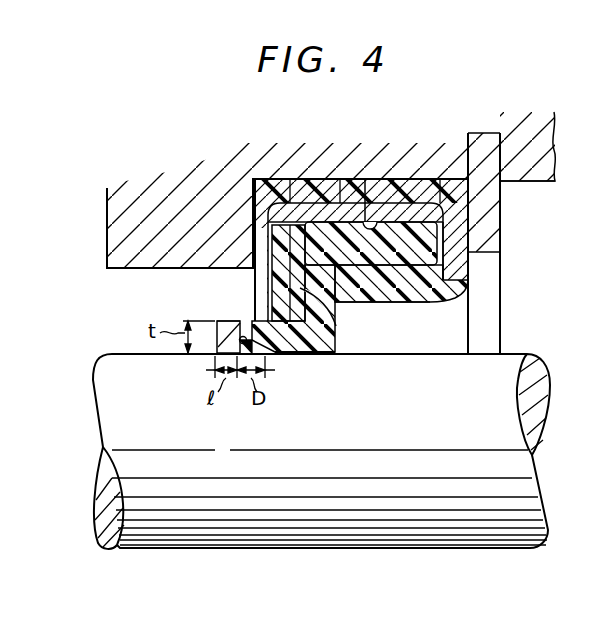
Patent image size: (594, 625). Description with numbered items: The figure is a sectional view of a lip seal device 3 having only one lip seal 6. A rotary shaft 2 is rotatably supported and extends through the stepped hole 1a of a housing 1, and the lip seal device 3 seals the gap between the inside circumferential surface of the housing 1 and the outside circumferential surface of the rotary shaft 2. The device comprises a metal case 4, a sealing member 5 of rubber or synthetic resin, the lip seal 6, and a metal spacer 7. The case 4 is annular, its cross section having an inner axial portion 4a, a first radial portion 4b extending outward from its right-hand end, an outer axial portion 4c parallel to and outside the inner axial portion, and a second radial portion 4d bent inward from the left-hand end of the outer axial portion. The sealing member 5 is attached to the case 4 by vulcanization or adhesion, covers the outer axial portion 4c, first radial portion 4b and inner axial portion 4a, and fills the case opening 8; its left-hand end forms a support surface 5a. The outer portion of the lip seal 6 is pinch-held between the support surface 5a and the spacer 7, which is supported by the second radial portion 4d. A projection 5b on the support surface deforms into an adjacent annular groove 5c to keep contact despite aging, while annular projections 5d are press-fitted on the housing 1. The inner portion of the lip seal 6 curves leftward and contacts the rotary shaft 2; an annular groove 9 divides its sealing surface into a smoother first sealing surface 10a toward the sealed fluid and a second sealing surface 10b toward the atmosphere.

The housing 1 is at (514, 184).
The stepped hole 1a is at (543, 183).
The rotary shaft 2 is at (514, 354).
The lip seal device 3 is at (470, 280).
The case 4 is at (383, 195).
The inner axial portion 4a is at (392, 283).
The first radial portion 4b is at (458, 238).
The outer axial portion 4c is at (410, 205).
The second radial portion 4d is at (262, 265).
The sealing member 5 is at (294, 180).
The support surface 5a is at (345, 302).
The projection 5b is at (300, 182).
The annular groove 5c is at (337, 185).
The annular projections 5d is at (430, 185).
The lip seal 6 is at (322, 338).
The spacer 7 is at (294, 283).
The case opening 8 is at (362, 184).
The annular groove 9 is at (238, 320).
The first sealing surface 10a is at (218, 356).
The second sealing surface 10b is at (276, 353).